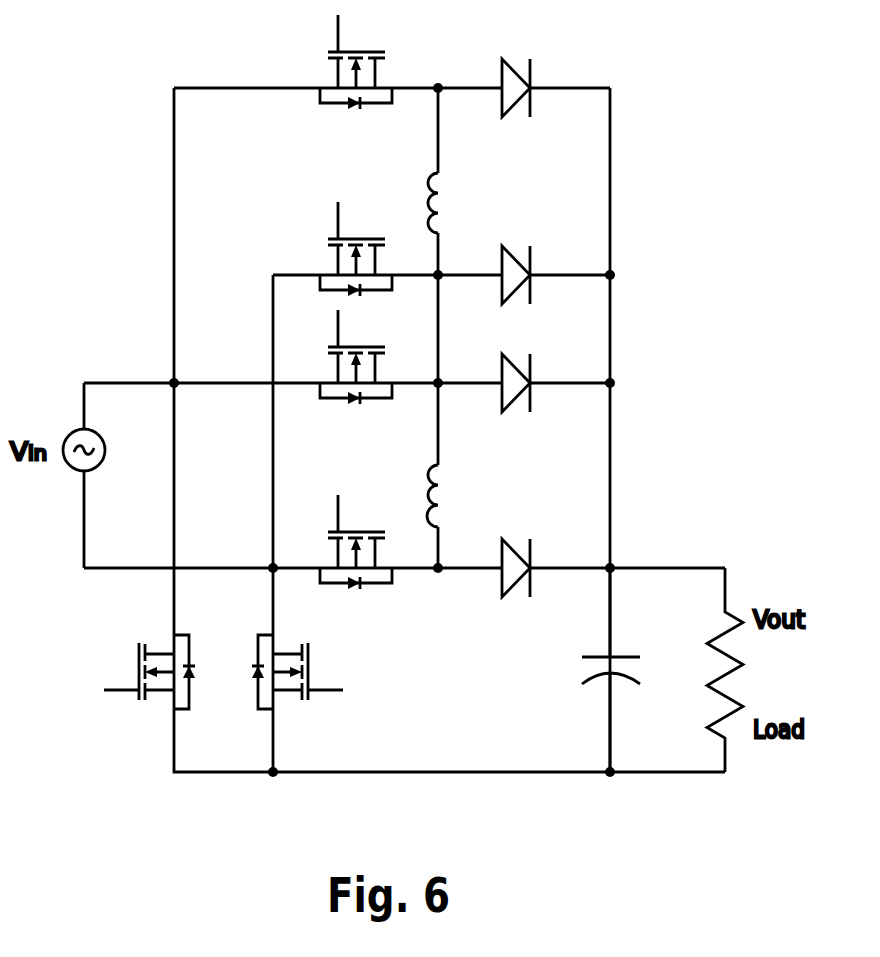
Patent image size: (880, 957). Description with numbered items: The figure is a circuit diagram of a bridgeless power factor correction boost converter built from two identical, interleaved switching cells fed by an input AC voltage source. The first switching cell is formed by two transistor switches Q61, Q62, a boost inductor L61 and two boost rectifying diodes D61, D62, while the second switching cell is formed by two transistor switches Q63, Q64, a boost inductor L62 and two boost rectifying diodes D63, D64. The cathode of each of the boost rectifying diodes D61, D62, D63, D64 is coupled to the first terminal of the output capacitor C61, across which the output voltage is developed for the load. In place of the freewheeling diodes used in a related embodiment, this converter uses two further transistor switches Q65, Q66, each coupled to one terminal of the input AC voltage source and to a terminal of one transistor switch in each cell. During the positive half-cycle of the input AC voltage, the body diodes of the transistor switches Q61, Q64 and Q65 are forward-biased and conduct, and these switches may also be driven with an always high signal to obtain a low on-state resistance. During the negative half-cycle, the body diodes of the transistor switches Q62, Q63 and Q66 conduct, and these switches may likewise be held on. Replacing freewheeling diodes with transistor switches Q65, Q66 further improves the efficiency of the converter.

The transistor switch Q61 is at (339, 62).
The transistor switch Q62 is at (339, 249).
The transistor switch Q63 is at (339, 357).
The transistor switch Q64 is at (339, 542).
The transistor switch Q65 is at (140, 681).
The transistor switch Q66 is at (309, 681).
The boost rectifying diode D61 is at (517, 70).
The boost rectifying diode D62 is at (518, 257).
The boost rectifying diode D63 is at (518, 364).
The boost rectifying diode D64 is at (518, 589).
The boost inductor L61 is at (459, 203).
The boost inductor L62 is at (460, 496).
The output capacitor C61 is at (584, 670).